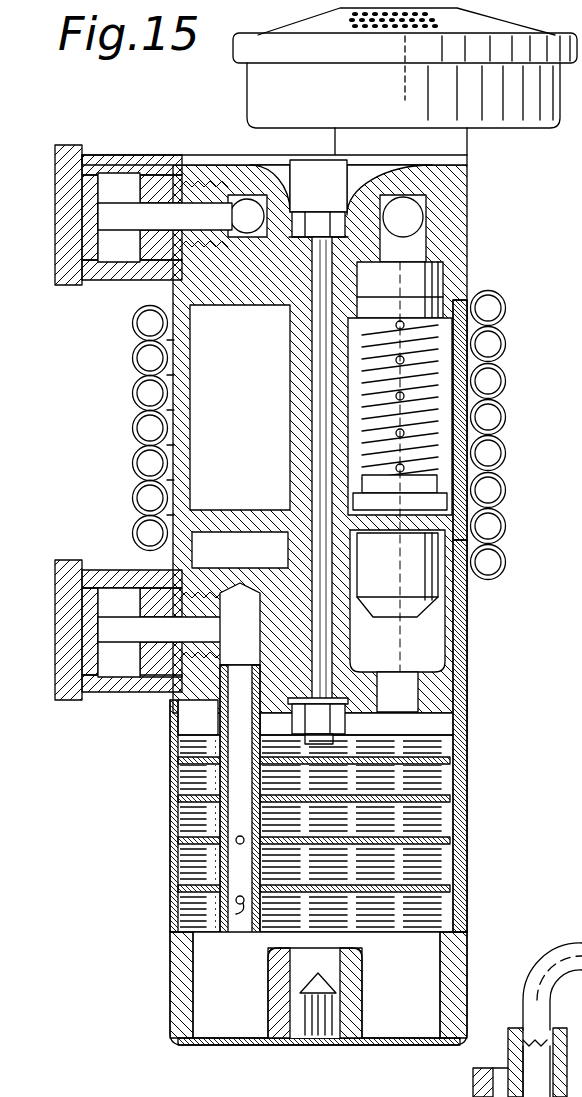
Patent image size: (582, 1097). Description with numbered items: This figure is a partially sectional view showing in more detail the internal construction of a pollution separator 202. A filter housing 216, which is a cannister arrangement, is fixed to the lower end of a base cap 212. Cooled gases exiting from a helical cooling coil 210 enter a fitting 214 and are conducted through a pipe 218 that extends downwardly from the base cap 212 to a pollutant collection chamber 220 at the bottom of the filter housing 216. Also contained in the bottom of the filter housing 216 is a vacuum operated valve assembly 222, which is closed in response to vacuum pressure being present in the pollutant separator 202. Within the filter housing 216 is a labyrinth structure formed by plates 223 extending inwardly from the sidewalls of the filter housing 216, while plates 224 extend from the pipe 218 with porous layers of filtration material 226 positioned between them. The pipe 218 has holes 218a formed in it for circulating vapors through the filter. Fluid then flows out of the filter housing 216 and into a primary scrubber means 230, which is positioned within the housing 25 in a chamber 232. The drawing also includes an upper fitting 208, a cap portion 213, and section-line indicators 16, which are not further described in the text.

The pollution separator 202 is at (217, 122).
The upper fitting 208 is at (62, 228).
The helical cooling coil 210 is at (507, 336).
The base cap 212 is at (453, 669).
The cap portion 213 is at (448, 196).
The fitting 214 is at (62, 648).
The filter housing 216 is at (170, 817).
The pipe 218 is at (222, 772).
The holes 218a is at (232, 903).
The pollutant collection chamber 220 is at (210, 995).
The vacuum operated valve assembly 222 is at (342, 1020).
The plates 223 is at (433, 838).
The plates 224 is at (432, 797).
The porous layers of filtration material 226 is at (427, 862).
The primary scrubber means 230 is at (432, 421).
The chamber 232 is at (205, 392).
The housing 25 is at (470, 453).
The section line 16- 16 is at (33, 640).